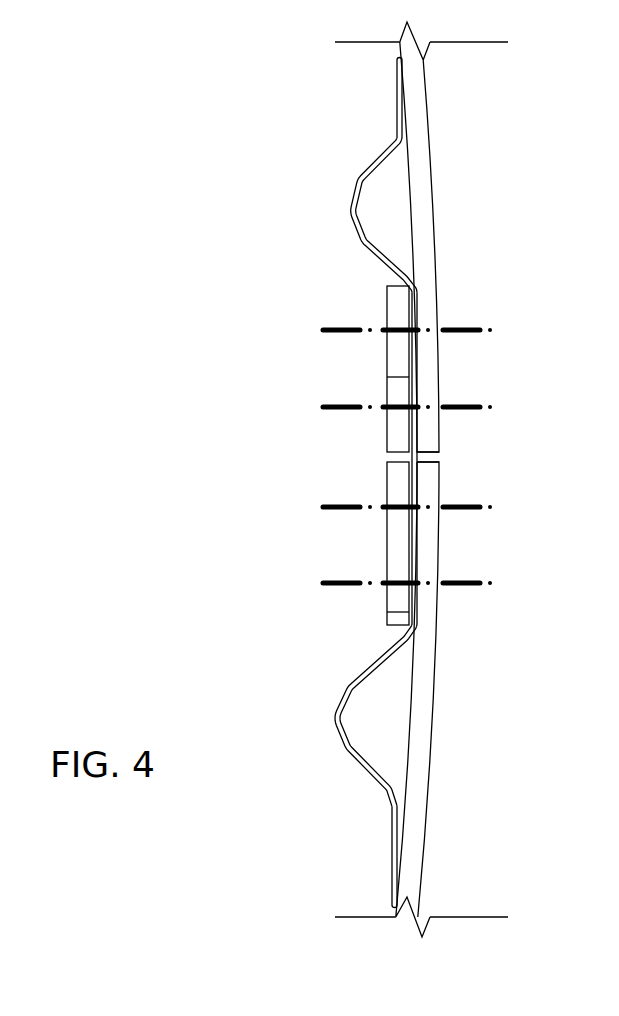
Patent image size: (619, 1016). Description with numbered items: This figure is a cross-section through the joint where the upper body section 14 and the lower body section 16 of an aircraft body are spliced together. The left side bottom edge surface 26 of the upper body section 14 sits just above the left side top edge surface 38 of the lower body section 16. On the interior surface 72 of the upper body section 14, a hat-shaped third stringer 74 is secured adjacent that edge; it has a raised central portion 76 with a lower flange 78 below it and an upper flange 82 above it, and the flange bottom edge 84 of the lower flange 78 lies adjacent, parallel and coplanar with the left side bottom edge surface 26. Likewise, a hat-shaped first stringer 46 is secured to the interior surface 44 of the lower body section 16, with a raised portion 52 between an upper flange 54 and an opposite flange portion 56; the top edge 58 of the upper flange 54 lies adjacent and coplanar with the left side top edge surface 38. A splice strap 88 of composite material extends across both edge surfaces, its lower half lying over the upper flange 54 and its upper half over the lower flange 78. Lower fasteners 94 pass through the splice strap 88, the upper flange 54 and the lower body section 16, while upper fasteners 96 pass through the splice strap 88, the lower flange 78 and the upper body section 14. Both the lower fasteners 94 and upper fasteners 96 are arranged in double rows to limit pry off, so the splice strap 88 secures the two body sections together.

The upper body section 14 is at (437, 86).
The lower body section 16 is at (438, 806).
The left side bottom edge surface 26 is at (430, 455).
The left side top edge surface 38 is at (420, 462).
The interior surface 44 is at (392, 905).
The first stringer 46 is at (328, 743).
The raised portion 52 is at (334, 713).
The upper flange 54 is at (388, 612).
The flange portion 56 is at (392, 853).
The top edge 58 is at (417, 462).
The interior surface 72 is at (397, 58).
The third stringer 74 is at (343, 243).
The raised central portion 76 is at (350, 214).
The lower flange 78 is at (387, 377).
The upper flange 82 is at (397, 121).
The flange bottom edge 84 is at (415, 452).
The splice strap 88 is at (375, 541).
The lower fasteners 94 is at (505, 507).
The upper fasteners 96 is at (505, 329).